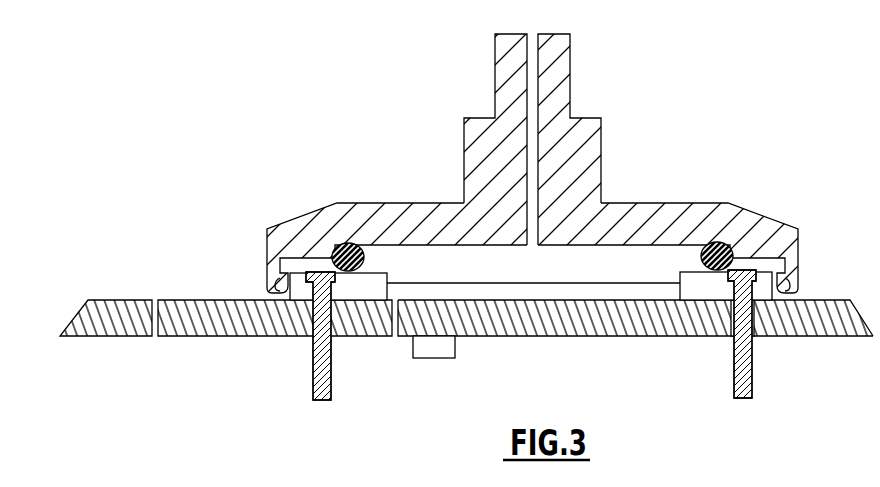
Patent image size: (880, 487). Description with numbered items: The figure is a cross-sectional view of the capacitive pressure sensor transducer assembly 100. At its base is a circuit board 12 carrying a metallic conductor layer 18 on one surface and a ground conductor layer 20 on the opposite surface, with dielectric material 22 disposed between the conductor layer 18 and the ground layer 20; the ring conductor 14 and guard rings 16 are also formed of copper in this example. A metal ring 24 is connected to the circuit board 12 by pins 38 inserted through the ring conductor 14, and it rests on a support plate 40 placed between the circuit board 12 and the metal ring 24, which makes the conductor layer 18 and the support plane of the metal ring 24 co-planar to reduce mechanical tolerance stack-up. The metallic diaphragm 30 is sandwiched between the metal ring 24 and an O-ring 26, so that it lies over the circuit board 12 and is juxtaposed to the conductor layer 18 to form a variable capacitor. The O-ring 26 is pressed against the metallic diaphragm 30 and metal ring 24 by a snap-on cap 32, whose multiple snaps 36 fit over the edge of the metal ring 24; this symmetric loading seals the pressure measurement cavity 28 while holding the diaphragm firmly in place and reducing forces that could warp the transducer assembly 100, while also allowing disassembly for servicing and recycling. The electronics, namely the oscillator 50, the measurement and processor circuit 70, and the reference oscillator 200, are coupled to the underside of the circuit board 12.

The transducer assembly 100 is at (697, 72).
The snap-on cap 32 is at (600, 125).
The metal ring 24 is at (502, 244).
The O-ring 26 is at (338, 246).
The pressure measurement cavity 28 is at (420, 256).
The snaps 36 is at (267, 256).
The metallic diaphragm 30 is at (549, 283).
The support plate 40 is at (357, 310).
The dielectric material 22 is at (498, 318).
The ground conductor layer 20 is at (557, 337).
The metallic conductor layer 18 is at (612, 300).
The guard rings 16 is at (635, 341).
The ring conductor 14 is at (732, 333).
The circuit board 12 is at (466, 341).
The pins 38 is at (752, 387).
The oscillator 50 is at (357, 354).
The measurement and processor circuit 70 is at (357, 354).
The reference oscillator 200 is at (433, 350).